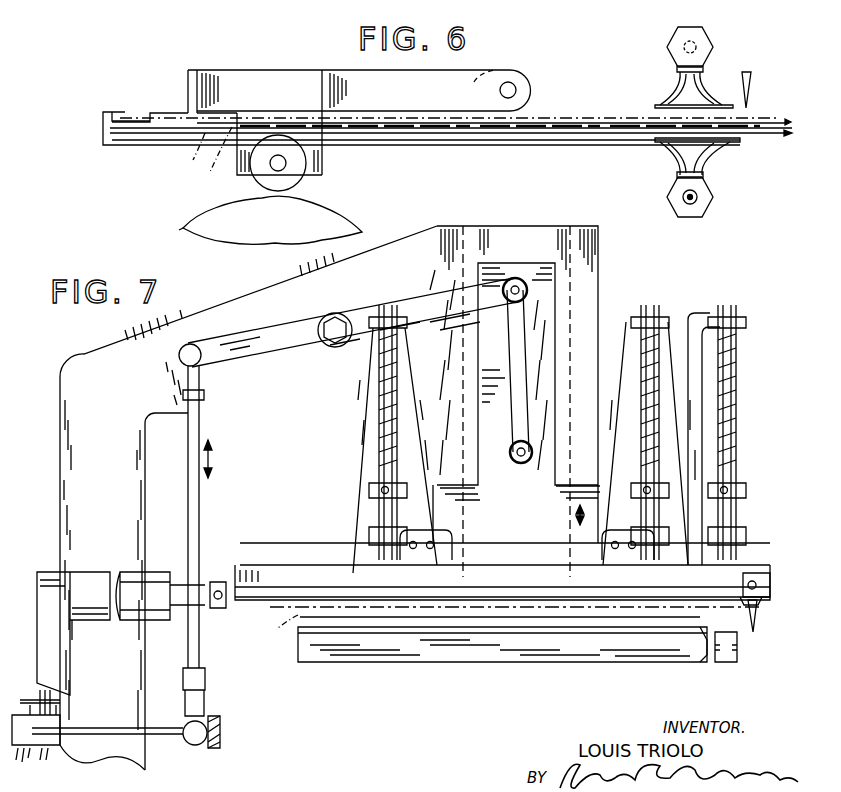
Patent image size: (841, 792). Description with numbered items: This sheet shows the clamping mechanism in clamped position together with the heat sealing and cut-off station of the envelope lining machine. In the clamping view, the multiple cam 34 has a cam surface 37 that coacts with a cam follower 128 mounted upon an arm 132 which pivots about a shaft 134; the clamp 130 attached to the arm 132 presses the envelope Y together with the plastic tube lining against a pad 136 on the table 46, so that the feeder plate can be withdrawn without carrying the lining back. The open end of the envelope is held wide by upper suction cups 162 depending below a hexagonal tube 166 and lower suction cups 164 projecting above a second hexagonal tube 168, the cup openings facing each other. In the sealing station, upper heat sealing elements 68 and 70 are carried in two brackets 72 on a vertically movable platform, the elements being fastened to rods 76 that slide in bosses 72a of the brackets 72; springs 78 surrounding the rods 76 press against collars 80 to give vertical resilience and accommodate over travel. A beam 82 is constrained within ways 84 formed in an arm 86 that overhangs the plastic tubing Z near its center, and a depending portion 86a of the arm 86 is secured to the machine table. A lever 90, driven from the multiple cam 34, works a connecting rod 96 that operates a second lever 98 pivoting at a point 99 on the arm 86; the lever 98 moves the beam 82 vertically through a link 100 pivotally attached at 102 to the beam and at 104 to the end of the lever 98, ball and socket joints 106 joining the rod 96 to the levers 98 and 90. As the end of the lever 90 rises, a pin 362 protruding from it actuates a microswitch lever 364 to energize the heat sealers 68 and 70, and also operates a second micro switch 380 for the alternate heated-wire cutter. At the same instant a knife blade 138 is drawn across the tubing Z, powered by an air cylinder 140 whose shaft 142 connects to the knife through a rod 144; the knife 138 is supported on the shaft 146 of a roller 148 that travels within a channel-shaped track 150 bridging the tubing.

In FIG. 6, the multiple cam 34 is at (170, 233).
In FIG. 6, the cam surface 37 is at (354, 222).
In FIG. 6, the table 46 is at (455, 146).
In FIG. 7, the heat sealing elements 68 is at (729, 663).
In FIG. 7, the heat sealing elements 70 is at (534, 662).
In FIG. 7, the brackets 72 is at (530, 548).
In FIG. 7, the bosses 72a is at (386, 318).
In FIG. 7, the rods 76 is at (382, 384).
In FIG. 7, the springs 78 is at (374, 447).
In FIG. 7, the collars 80 is at (368, 492).
In FIG. 7, the beam 82 is at (541, 511).
In FIG. 7, the ways 84 is at (468, 232).
In FIG. 7, the arm 86 is at (543, 226).
In FIG. 7, the depending portion 86a is at (127, 515).
In FIG. 7, the lever 90 is at (218, 747).
In FIG. 7, the connecting rod 96 is at (200, 526).
In FIG. 7, the lever 98 is at (258, 342).
In FIG. 7, the pivot point 99 is at (340, 320).
In FIG. 7, the link 100 is at (520, 395).
In FIG. 7, the pivot 102 is at (516, 458).
In FIG. 7, the pivot 104 is at (515, 280).
In FIG. 7, the ball and socket joints 106 is at (200, 380).
In FIG. 6, the cam follower 128 is at (300, 181).
In FIG. 6, the clamp 130 is at (160, 117).
In FIG. 6, the arm 132 is at (427, 100).
In FIG. 6, the shaft 134 is at (508, 86).
In FIG. 6, the pad 136 is at (140, 143).
In FIG. 6, the knife blade 138 is at (751, 86).
In FIG. 7, the knife blade 138 is at (753, 633).
In FIG. 7, the air cylinder 140 is at (90, 582).
In FIG. 7, the shaft 142 is at (180, 588).
In FIG. 7, the rod 144 is at (268, 590).
In FIG. 7, the shaft 146 is at (754, 580).
In FIG. 7, the roller 148 is at (772, 600).
In FIG. 7, the channel-shaped track 150 is at (306, 568).
In FIG. 6, the upper suction cups 162 is at (665, 88).
In FIG. 6, the lower suction cups 164 is at (662, 155).
In FIG. 6, the hexagonal tube 166 is at (676, 45).
In FIG. 6, the hexagonal tube 168 is at (672, 200).
In FIG. 7, the pin 362 is at (168, 738).
In FIG. 7, the microswitch lever 364 is at (60, 700).
In FIG. 7, the micro switch 380 is at (38, 748).
In FIG. 6, the envelope Y is at (193, 153).
In FIG. 6, the plastic tubing Z is at (214, 159).
In FIG. 7, the plastic tubing Z is at (281, 628).